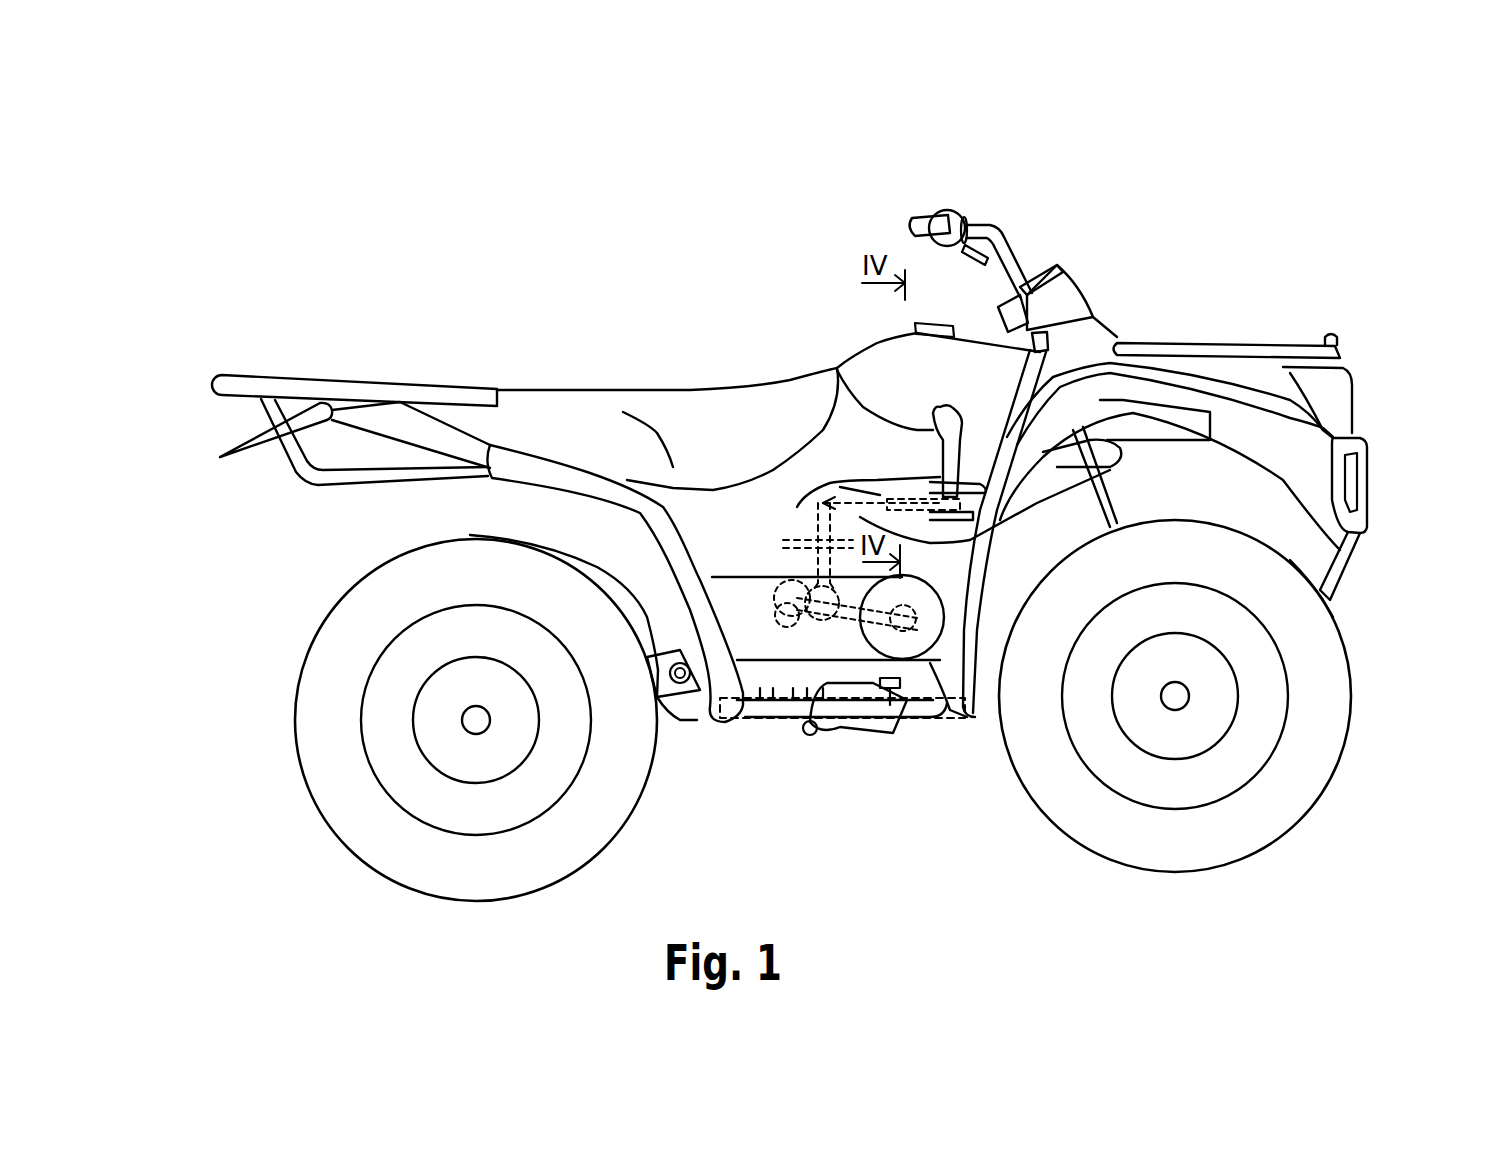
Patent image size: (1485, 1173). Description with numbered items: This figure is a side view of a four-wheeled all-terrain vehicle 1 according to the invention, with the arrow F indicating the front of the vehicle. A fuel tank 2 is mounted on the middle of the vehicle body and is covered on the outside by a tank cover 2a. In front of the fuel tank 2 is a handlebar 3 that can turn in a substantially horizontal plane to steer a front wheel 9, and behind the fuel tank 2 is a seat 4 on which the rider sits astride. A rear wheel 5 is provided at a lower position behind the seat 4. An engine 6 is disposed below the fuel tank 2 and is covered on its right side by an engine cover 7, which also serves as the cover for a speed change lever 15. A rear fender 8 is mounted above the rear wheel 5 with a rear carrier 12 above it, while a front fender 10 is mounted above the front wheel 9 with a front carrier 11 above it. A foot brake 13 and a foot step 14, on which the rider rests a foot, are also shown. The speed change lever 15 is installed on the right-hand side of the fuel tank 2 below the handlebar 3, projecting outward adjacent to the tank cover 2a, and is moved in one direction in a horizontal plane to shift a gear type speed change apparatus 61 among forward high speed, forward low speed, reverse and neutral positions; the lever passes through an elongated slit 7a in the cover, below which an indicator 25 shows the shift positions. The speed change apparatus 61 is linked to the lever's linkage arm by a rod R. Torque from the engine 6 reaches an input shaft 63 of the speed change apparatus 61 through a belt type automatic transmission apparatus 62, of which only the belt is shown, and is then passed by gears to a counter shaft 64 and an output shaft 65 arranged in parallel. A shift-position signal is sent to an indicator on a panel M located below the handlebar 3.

The four-wheeled all-terrain vehicle 1 is at (580, 212).
The fuel tank 2 is at (900, 362).
The tank cover 2a is at (732, 429).
The handlebar 3 is at (995, 238).
The seat 4 is at (518, 400).
The rear wheel 5 is at (323, 755).
The engine 6 is at (922, 697).
The engine cover 7 is at (943, 527).
The slit 7a is at (877, 503).
The rear fender 8 is at (407, 430).
The front wheel 9 is at (1313, 770).
The front fender 10 is at (1230, 403).
The front carrier 11 is at (1203, 350).
The rear carrier 12 is at (305, 390).
The foot brake 13 is at (913, 700).
The foot step 14 is at (830, 700).
The speed change lever 15 is at (900, 495).
The indicator 25 is at (887, 497).
The gear type speed change apparatus 61 is at (757, 600).
The belt type automatic transmission apparatus 62 is at (853, 617).
The input shaft 63 is at (850, 503).
The counter shaft 64 is at (827, 610).
The output shaft 65 is at (783, 607).
The rod R is at (780, 597).
The panel M is at (1037, 267).
The arrow F is at (1382, 568).